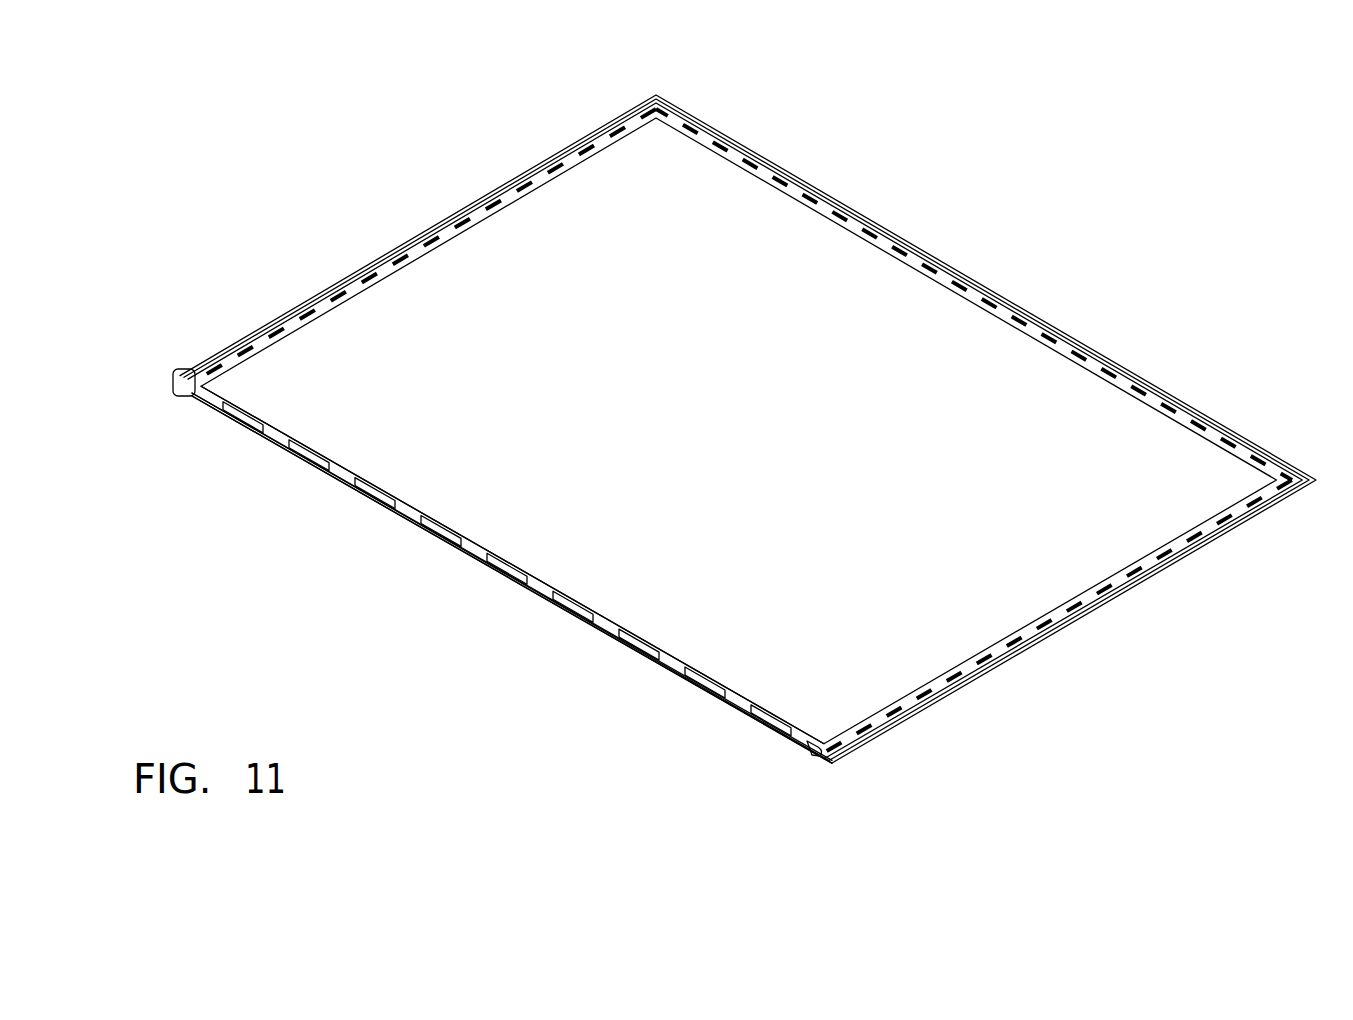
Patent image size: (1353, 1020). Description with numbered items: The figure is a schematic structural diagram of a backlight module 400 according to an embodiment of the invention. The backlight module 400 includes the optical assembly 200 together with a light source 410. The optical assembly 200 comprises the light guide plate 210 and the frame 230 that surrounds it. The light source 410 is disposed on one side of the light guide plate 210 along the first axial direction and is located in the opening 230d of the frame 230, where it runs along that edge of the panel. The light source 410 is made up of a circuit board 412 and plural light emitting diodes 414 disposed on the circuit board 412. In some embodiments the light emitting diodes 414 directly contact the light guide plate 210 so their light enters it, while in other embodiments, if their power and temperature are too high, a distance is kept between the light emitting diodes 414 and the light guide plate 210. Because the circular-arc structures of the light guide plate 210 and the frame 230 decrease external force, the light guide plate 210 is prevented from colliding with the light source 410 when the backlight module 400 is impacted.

The backlight module 400 is at (138, 167).
The optical assembly 200 is at (437, 122).
The light guide plate 210 is at (445, 287).
The frame 230 is at (313, 292).
The opening 230d is at (569, 640).
The light source 410 is at (386, 513).
The circuit board 412 is at (471, 548).
The light emitting diodes 414 is at (430, 528).